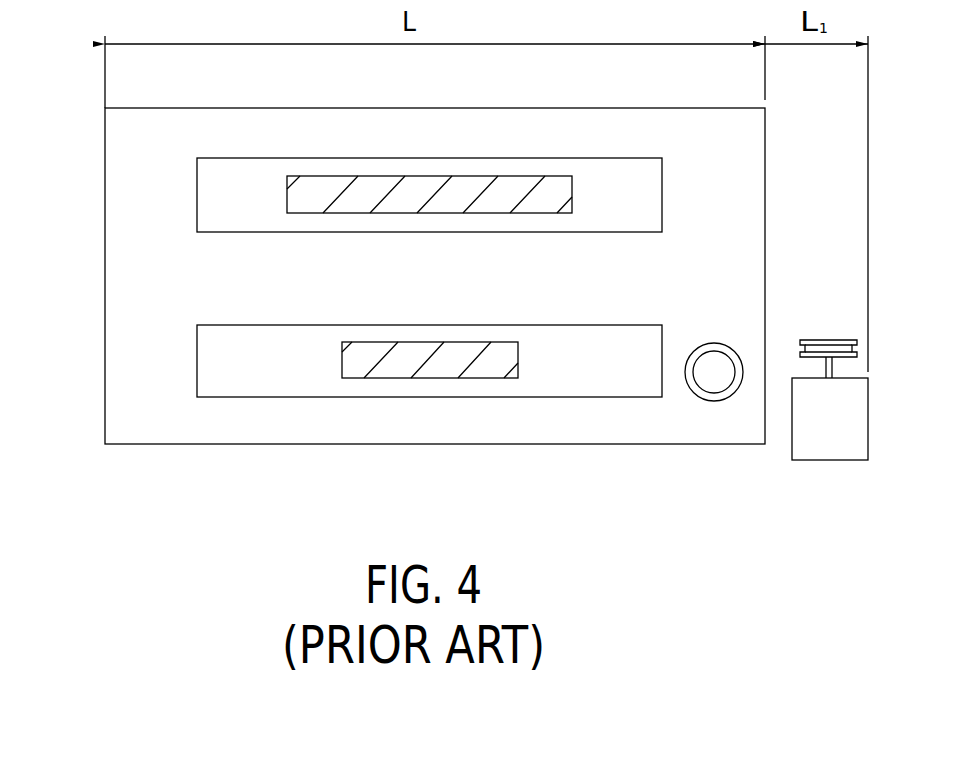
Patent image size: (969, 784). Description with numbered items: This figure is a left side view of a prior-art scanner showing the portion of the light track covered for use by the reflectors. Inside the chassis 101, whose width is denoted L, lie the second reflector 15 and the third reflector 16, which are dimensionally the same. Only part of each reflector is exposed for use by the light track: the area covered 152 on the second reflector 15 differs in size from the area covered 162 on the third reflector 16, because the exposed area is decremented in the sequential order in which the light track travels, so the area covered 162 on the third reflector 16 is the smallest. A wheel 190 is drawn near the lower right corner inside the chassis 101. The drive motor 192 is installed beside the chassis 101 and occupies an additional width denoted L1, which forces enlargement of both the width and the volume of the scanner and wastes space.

The chassis 101 is at (765, 162).
The second reflector 15 is at (197, 178).
The area covered for use by the light track of the second reflector 152 is at (306, 197).
The third reflector 16 is at (197, 343).
The area covered for use by the light track of the third reflector 162 is at (342, 361).
The roller / wheel 190 is at (711, 383).
The drive motor 192 is at (823, 450).